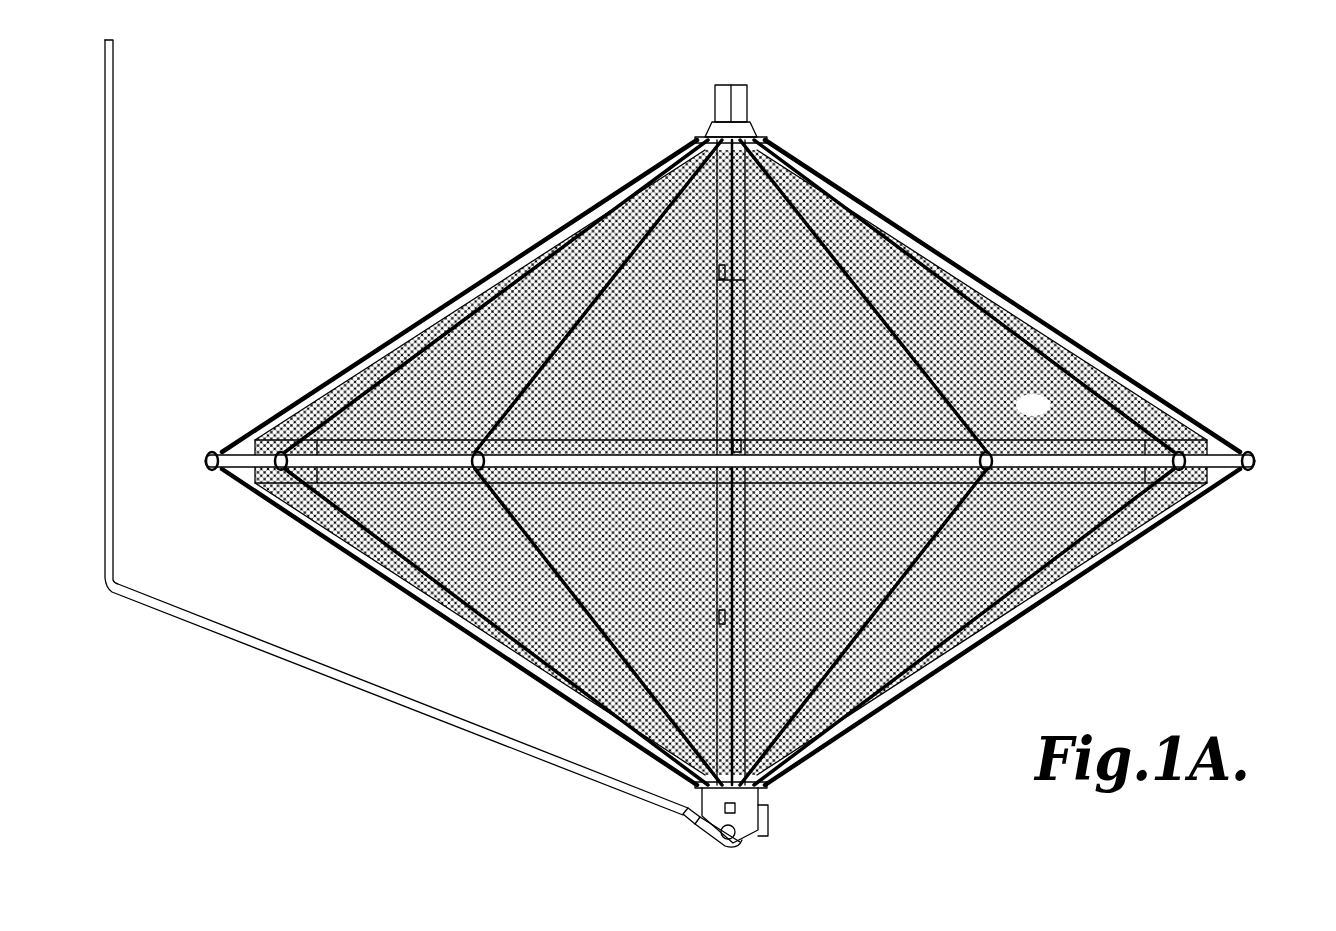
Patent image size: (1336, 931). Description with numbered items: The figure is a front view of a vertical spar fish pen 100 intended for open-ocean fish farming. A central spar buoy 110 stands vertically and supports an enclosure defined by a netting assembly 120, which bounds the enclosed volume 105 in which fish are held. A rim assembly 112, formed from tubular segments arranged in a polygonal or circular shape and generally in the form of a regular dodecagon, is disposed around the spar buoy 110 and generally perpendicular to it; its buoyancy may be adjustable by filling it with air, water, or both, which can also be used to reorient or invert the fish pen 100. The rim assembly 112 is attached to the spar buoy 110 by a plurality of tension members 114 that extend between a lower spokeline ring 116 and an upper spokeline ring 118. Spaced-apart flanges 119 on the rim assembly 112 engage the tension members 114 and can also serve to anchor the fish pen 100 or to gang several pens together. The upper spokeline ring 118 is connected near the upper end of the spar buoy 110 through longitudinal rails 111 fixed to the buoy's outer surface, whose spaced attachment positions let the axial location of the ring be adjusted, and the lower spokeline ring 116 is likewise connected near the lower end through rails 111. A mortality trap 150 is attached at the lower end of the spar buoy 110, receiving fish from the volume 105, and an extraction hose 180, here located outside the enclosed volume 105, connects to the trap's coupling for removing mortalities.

The vertical spar fish pen 100 is at (1066, 243).
The volume 105 is at (1030, 403).
The spar buoy 110 is at (744, 211).
The longitudinal rails 111 is at (714, 100).
The rim assembly 112 is at (1213, 449).
The tension members 114 is at (830, 250).
The lower spokeline ring 116 is at (767, 786).
The upper spokeline ring 118 is at (758, 128).
The flanges 119 is at (1256, 463).
The netting assembly 120 is at (505, 276).
The mortality trap 150 is at (779, 820).
The extraction hose 180 is at (113, 135).